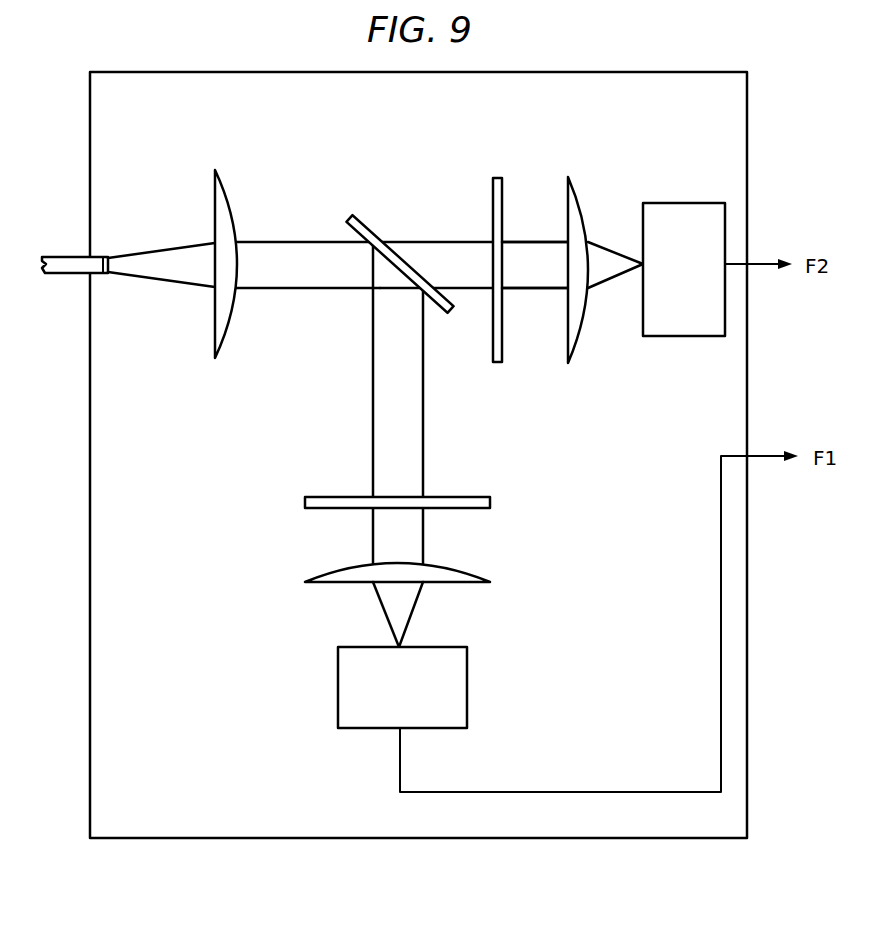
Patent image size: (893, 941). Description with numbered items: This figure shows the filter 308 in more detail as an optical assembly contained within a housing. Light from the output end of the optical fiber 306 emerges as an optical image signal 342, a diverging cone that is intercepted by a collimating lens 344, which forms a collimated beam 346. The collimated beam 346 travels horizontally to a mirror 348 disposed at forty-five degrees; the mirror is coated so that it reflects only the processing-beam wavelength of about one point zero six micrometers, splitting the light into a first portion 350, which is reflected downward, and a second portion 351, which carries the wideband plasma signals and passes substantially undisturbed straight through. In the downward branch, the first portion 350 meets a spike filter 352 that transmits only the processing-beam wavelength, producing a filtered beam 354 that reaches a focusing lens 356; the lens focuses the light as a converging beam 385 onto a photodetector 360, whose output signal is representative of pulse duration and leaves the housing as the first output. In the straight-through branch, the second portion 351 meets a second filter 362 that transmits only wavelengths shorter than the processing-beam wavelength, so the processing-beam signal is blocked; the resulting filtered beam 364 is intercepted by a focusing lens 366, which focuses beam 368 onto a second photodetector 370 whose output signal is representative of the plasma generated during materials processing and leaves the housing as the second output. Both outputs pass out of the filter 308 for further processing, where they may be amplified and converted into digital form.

The optical fiber 306 is at (72, 278).
The filter 308 is at (653, 840).
The optical image signal 342 is at (178, 288).
The collimating lens 344 is at (224, 178).
The collimated beam 346 is at (307, 290).
The mirror 348 is at (362, 212).
The first portion 350 is at (424, 422).
The second portion 351 is at (428, 240).
The spike filter 352 is at (491, 503).
The filtered beam 354 is at (424, 540).
The focusing lens 356 is at (491, 580).
The photodetector 360 is at (468, 685).
The second filter 362 is at (505, 185).
The filtered beam 364 is at (538, 290).
The focusing lens 366 is at (582, 186).
The beam 368 is at (600, 290).
The second photodetector 370 is at (680, 203).
The converging light beam 385 is at (415, 612).